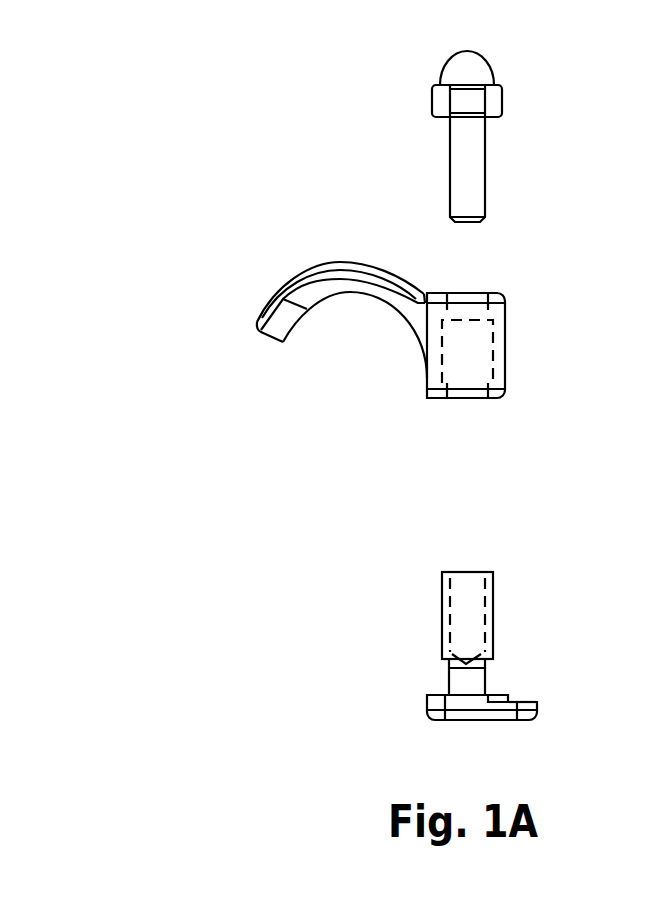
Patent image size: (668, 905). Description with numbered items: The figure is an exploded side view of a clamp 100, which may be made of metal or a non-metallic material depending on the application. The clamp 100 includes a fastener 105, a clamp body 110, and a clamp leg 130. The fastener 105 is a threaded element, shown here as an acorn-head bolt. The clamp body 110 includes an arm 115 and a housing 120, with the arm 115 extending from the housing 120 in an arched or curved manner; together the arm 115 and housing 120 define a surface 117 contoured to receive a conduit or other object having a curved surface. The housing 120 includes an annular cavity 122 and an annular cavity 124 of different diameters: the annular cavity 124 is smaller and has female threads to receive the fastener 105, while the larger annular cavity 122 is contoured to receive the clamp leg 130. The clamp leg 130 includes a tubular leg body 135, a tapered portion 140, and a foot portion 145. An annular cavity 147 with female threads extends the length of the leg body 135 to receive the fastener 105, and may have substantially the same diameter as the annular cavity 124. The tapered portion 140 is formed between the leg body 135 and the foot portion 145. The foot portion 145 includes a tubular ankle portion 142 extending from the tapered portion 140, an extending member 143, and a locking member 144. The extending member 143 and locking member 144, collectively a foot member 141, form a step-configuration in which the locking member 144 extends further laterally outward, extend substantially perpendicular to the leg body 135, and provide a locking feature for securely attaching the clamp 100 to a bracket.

The clamp 100 is at (252, 75).
The fastener 105 is at (460, 182).
The clamp body 110 is at (242, 237).
The arm 115 is at (430, 268).
The surface 117 is at (356, 303).
The housing 120 is at (517, 293).
The annular cavity 122 is at (469, 363).
The annular cavity 124 is at (461, 293).
The clamp leg 130 is at (408, 545).
The leg body 135 is at (510, 572).
The tapered portion 140 is at (448, 666).
The foot member 141 is at (422, 695).
The ankle portion 142 is at (485, 682).
The extending member 143 is at (508, 695).
The locking member 144 is at (545, 702).
The foot portion 145 is at (357, 668).
The annular cavity 147 is at (468, 597).